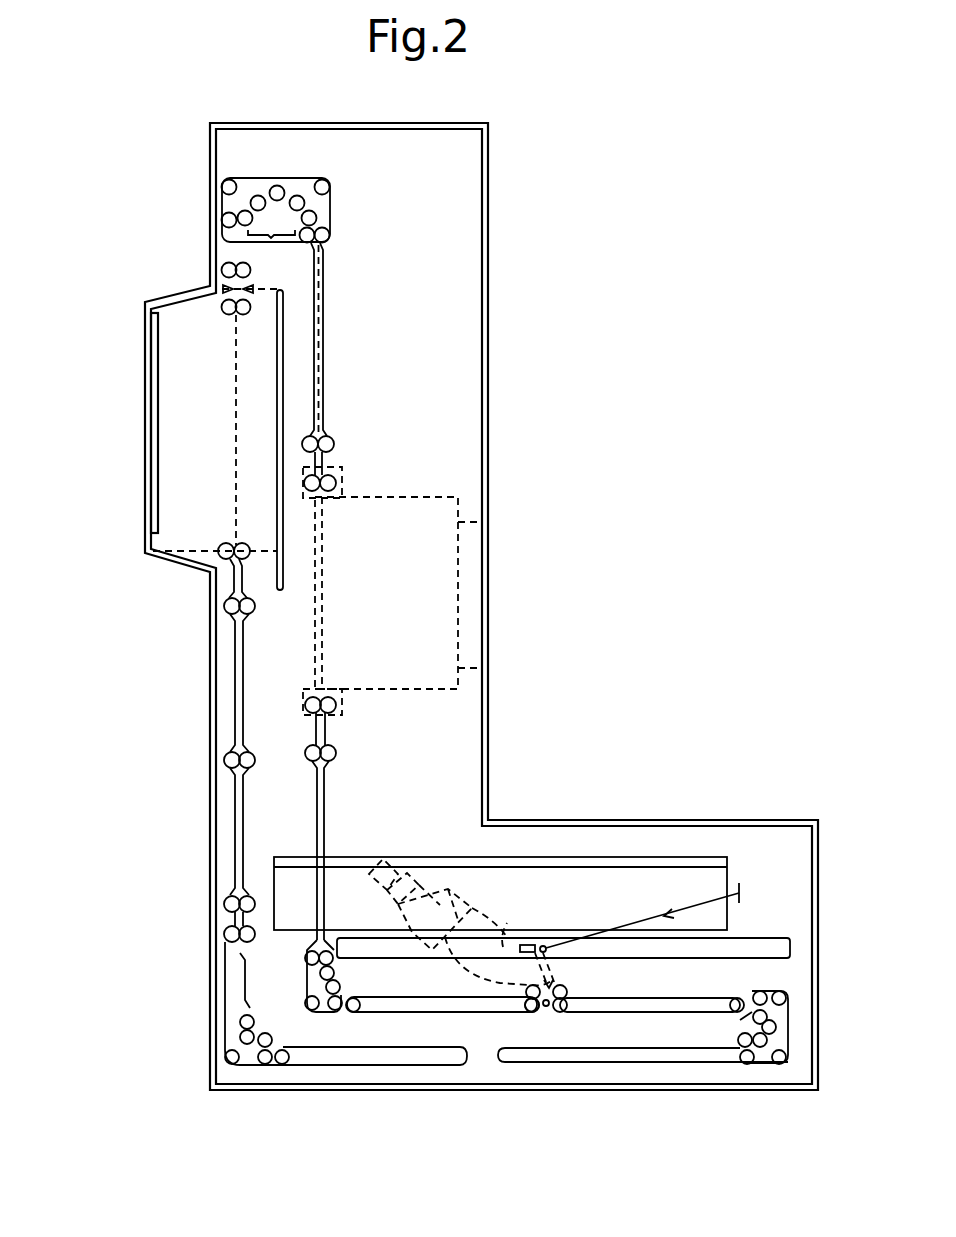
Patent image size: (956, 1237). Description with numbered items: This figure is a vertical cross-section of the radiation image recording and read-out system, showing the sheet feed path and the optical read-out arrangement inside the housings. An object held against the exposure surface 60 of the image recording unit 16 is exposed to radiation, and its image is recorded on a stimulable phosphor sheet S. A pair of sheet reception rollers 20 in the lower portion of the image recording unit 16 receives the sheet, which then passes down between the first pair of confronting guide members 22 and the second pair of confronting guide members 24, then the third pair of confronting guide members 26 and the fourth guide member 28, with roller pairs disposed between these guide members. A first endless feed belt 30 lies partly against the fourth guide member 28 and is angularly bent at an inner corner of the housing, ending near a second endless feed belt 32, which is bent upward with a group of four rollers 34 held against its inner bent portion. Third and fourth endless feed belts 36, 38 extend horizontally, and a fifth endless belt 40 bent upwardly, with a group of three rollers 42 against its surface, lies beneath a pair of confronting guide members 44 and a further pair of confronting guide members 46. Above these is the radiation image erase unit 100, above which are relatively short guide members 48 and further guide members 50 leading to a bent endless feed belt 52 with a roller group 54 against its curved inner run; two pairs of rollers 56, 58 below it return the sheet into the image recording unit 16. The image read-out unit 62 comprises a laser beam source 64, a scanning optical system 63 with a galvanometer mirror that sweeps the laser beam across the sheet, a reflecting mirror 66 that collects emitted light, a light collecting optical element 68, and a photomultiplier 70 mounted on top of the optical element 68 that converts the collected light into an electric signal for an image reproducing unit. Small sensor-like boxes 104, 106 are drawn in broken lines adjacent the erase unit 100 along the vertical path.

The image recording unit 16 is at (176, 434).
The sheet reception rollers 20 is at (216, 547).
The first pair of confronting guide members 22 is at (247, 546).
The second pair of confronting guide members 24 is at (237, 683).
The third pair of confronting guide members 26 is at (237, 829).
The fourth guide member 28 is at (243, 972).
The first endless feed belt 30 is at (232, 1015).
The second endless feed belt 32 is at (590, 1060).
The group of four rollers 34 is at (733, 1022).
The third endless feed belt 36 is at (665, 1004).
The fourth endless feed belt 38 is at (420, 1010).
The fifth endless belt 40 is at (312, 990).
The group of three rollers 42 is at (340, 997).
The pair of confronting guide members 44 is at (316, 829).
The pair of confronting guide members 46 is at (328, 733).
The short guide members 48 is at (328, 456).
The guide members 50 is at (326, 343).
The endless feed belt 52 is at (318, 200).
The roller group 54 is at (277, 227).
The pair of rollers 56 is at (229, 262).
The pair of rollers 58 is at (228, 303).
The exposure surface 60 is at (150, 333).
The image read-out unit 62 is at (623, 855).
The scanning optical system 63 is at (541, 945).
The laser beam source 64 is at (576, 907).
The reflecting mirror 66 is at (565, 985).
The light collecting optical element 68 is at (503, 947).
The photomultiplier 70 is at (380, 876).
The radiation image erase unit 100 is at (428, 588).
The sensor 104 is at (300, 702).
The sensor 106 is at (343, 472).
The stimulable phosphor sheet S is at (236, 405).